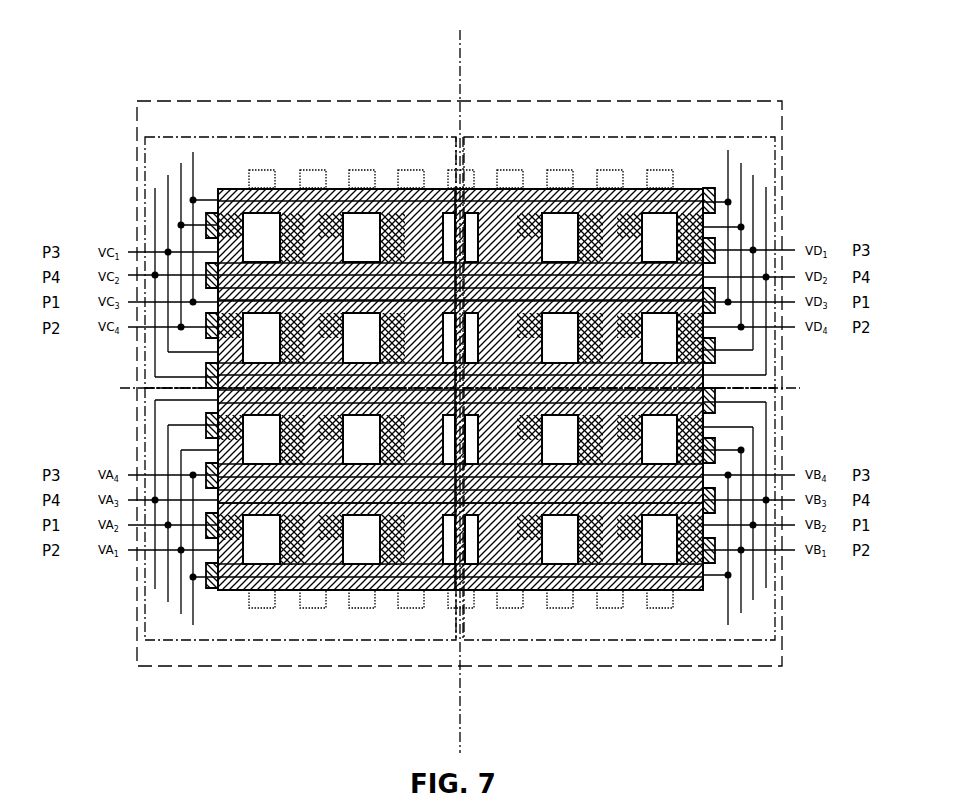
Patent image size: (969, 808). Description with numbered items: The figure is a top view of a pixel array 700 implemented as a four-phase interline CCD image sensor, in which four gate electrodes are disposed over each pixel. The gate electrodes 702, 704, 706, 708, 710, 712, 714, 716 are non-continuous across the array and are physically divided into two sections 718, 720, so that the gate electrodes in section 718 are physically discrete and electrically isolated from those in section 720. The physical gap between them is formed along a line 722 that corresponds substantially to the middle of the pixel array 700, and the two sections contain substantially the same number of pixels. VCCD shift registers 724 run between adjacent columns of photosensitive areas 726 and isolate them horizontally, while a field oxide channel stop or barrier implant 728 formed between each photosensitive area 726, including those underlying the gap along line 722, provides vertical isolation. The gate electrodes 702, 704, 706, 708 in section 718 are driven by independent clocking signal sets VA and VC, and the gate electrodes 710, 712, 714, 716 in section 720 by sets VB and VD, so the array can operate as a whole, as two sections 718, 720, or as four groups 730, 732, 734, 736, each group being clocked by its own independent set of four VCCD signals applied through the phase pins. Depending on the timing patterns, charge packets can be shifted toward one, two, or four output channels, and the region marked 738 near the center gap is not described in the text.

The pixel array 700 is at (230, 68).
The gate electrode 702 is at (283, 188).
The gate electrode 704 is at (337, 188).
The gate electrode 706 is at (395, 188).
The gate electrode 708 is at (440, 188).
The gate electrode 710 is at (530, 188).
The gate electrode 712 is at (585, 188).
The gate electrode 714 is at (640, 188).
The gate electrode 716 is at (687, 188).
The section 718 is at (137, 661).
The section 720 is at (782, 655).
The line 722 is at (461, 55).
The VCCD shift register 724 is at (308, 177).
The photosensitive area 726 is at (368, 545).
The field oxide channel stop or barrier implant 728 is at (352, 502).
The group of gate electrodes 730 is at (188, 643).
The group of gate electrodes 732 is at (735, 642).
The group of gate electrodes 734 is at (166, 137).
The group of gate electrodes 736 is at (745, 137).
The center isolation column 738 is at (472, 586).